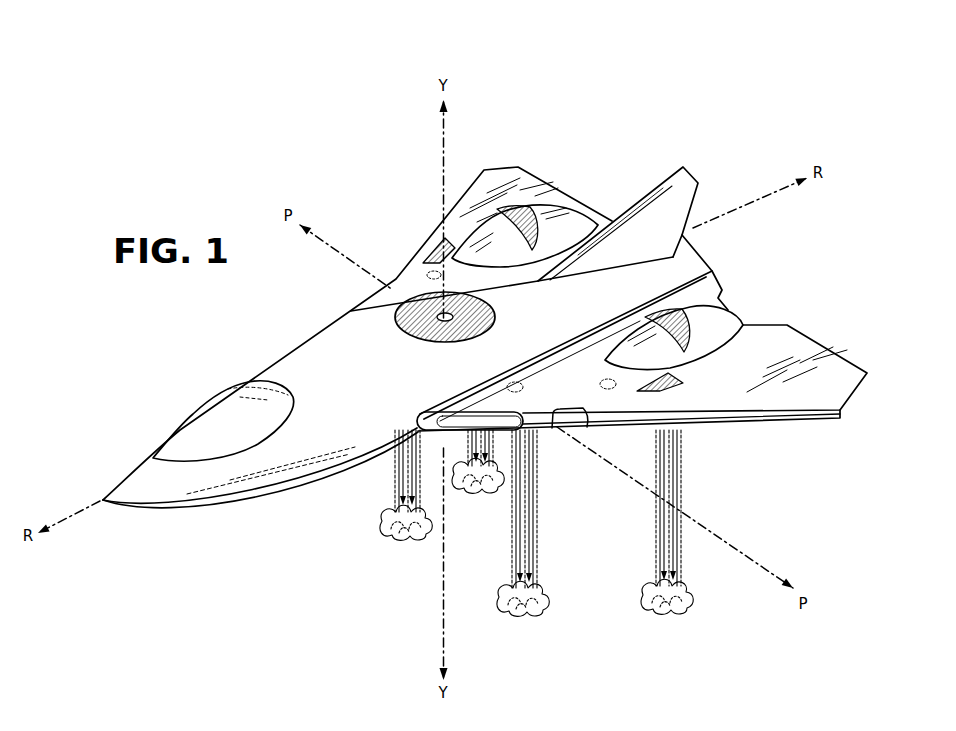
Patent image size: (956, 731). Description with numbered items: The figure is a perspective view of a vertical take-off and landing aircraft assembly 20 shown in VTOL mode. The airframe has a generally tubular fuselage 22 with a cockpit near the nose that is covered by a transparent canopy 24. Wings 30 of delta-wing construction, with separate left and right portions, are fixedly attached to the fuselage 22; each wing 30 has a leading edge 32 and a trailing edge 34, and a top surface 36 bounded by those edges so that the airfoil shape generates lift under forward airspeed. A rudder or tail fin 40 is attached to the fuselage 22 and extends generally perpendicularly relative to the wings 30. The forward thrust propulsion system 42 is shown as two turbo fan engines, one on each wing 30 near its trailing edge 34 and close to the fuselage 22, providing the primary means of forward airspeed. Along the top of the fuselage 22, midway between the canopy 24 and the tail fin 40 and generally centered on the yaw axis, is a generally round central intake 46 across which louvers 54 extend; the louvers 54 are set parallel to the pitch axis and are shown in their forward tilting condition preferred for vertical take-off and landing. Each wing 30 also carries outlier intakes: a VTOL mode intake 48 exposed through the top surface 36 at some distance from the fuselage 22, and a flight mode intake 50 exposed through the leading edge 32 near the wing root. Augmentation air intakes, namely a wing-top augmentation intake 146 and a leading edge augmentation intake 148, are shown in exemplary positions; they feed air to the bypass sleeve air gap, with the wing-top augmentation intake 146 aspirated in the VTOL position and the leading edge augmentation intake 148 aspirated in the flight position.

The aircraft assembly 20 is at (622, 134).
The fuselage 22 is at (303, 346).
The canopy 24 is at (204, 422).
The wing 30 is at (486, 168).
The leading edge 32 is at (394, 279).
The trailing edge 34 is at (543, 192).
The top surface 36 is at (503, 192).
The tail fin 40 is at (667, 192).
The forward thrust propulsion system 42 is at (570, 215).
The central intake 46 is at (396, 327).
The VTOL mode intake 48 is at (413, 253).
The flight mode intake 50 is at (452, 420).
The louvers 54 is at (495, 311).
The wing-top augmentation intake 146 is at (518, 381).
The leading edge augmentation intake 148 is at (554, 428).